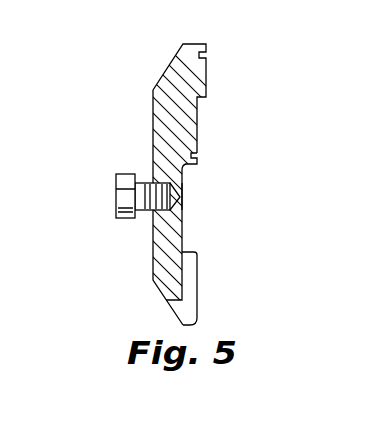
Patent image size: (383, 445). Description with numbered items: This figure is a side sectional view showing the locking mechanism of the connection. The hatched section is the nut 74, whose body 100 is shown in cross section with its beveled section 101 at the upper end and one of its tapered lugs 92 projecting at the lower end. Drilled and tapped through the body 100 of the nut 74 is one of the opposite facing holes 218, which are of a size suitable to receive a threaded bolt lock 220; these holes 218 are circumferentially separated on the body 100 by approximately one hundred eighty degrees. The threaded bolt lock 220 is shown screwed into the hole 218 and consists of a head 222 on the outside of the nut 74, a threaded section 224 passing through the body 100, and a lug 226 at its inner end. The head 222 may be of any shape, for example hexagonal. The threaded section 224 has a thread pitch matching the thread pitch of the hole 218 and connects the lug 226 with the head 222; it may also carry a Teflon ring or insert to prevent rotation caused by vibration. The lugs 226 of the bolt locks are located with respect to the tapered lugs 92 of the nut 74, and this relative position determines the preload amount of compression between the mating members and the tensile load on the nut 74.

The nut 74 is at (153, 265).
The tapered lugs 92 is at (190, 287).
The body 100 is at (155, 235).
The beveled section 101 is at (185, 92).
The holes 218 is at (182, 203).
The threaded bolt lock 220 is at (113, 177).
The head 222 is at (118, 195).
The threaded section 224 is at (148, 182).
The lug 226 is at (182, 192).